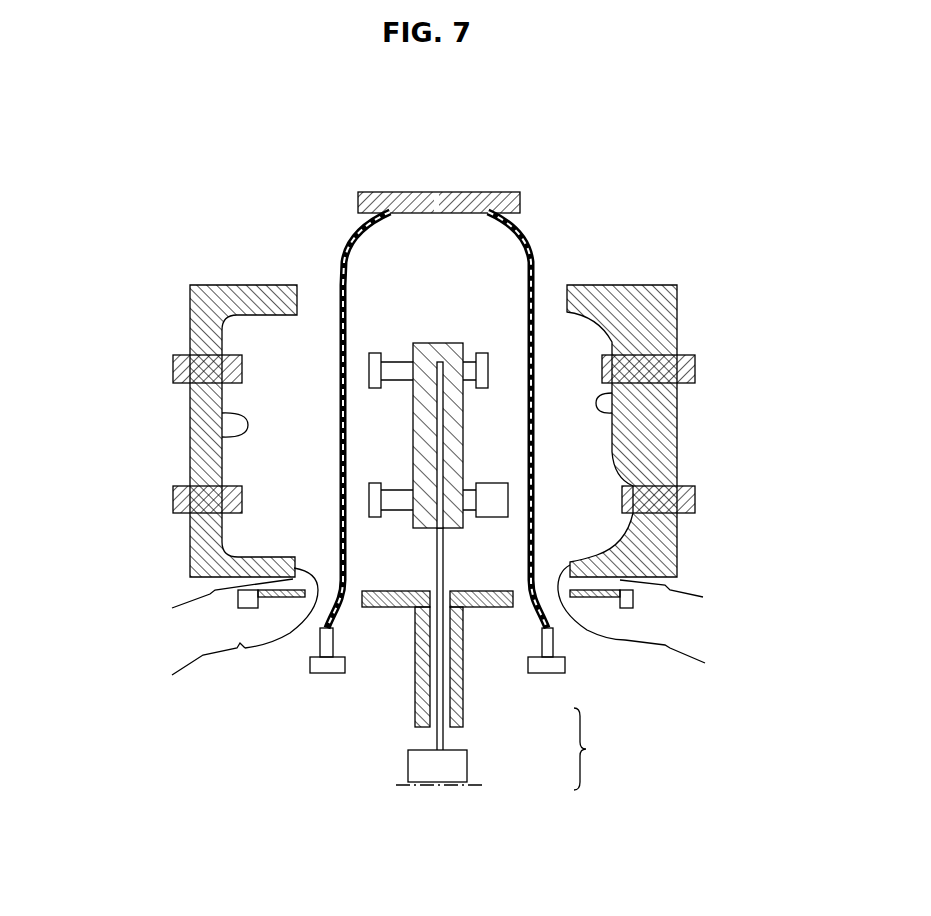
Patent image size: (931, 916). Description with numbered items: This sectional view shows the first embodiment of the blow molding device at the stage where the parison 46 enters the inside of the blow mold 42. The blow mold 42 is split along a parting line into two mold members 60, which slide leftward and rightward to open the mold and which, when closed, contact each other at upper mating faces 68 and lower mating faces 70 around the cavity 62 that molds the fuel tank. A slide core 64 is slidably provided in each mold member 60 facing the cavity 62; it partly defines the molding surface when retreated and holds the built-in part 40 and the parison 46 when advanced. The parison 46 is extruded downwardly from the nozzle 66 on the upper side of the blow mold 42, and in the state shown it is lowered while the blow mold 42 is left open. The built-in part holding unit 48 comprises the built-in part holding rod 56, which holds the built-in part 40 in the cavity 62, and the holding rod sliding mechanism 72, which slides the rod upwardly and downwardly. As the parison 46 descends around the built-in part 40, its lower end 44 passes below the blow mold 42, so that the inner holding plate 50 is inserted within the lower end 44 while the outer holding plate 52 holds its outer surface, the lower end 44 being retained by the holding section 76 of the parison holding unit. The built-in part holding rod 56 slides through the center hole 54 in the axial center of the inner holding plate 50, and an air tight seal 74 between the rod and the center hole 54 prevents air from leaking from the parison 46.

The built-in part 40 is at (430, 343).
The blow mold 42 is at (178, 295).
The lower end 44 is at (317, 627).
The parison 46 is at (338, 283).
The built-in part holding unit 48 is at (602, 749).
The inner holding plate 50 is at (393, 608).
The outer holding plate 52 is at (435, 627).
The center hole 54 is at (415, 680).
The built-in part holding rod 56 is at (443, 739).
The mold members 60 is at (257, 288).
The cavity 62 is at (222, 413).
The slide core 64 is at (173, 366).
The nozzle 66 is at (475, 193).
The upper mating faces 68 is at (297, 286).
The lower mating faces 70 is at (245, 608).
The holding rod sliding mechanism 72 is at (467, 770).
The air tight seal 74 is at (417, 725).
The holding section 76 is at (310, 662).